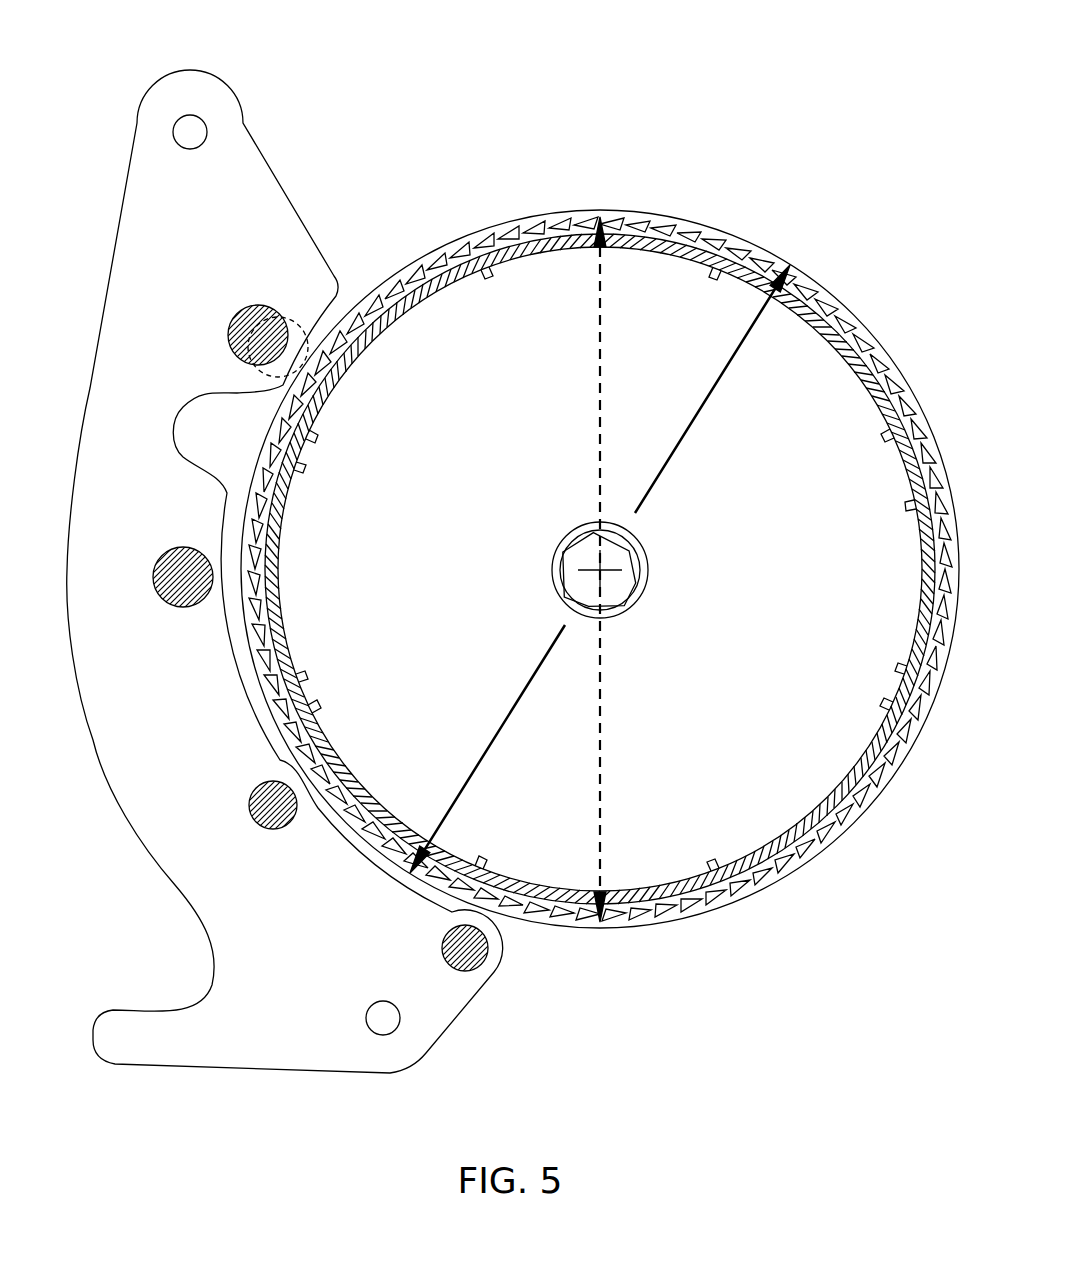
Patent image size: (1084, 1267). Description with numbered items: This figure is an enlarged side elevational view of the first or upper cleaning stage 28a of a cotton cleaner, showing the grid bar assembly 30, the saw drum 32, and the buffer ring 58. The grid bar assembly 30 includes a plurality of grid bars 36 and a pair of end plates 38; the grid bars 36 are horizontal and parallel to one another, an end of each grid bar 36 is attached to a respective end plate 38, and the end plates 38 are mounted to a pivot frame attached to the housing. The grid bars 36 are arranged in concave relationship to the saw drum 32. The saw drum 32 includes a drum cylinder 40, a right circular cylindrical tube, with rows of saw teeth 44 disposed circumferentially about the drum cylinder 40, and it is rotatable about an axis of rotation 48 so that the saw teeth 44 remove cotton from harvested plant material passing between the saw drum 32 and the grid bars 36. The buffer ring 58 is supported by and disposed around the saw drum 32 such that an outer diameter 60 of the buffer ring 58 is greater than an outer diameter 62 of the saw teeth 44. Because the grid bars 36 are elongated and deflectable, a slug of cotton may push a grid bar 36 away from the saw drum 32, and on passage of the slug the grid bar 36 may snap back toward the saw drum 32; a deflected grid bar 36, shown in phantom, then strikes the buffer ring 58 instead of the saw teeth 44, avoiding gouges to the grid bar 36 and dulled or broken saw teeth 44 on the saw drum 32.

The upper cleaning stage 28a is at (271, 538).
The grid bar assembly 30 is at (102, 250).
The saw drum 32 is at (808, 253).
The grid bars 36 is at (233, 313).
The end plates 38 is at (206, 870).
The drum cylinder 40 is at (383, 303).
The saw teeth 44 is at (430, 266).
The axis of rotation 48 is at (633, 587).
The buffer ring 58 is at (562, 203).
The outer diameter of the buffer ring 60 is at (487, 738).
The outer diameter of the saw teeth 62 is at (598, 345).